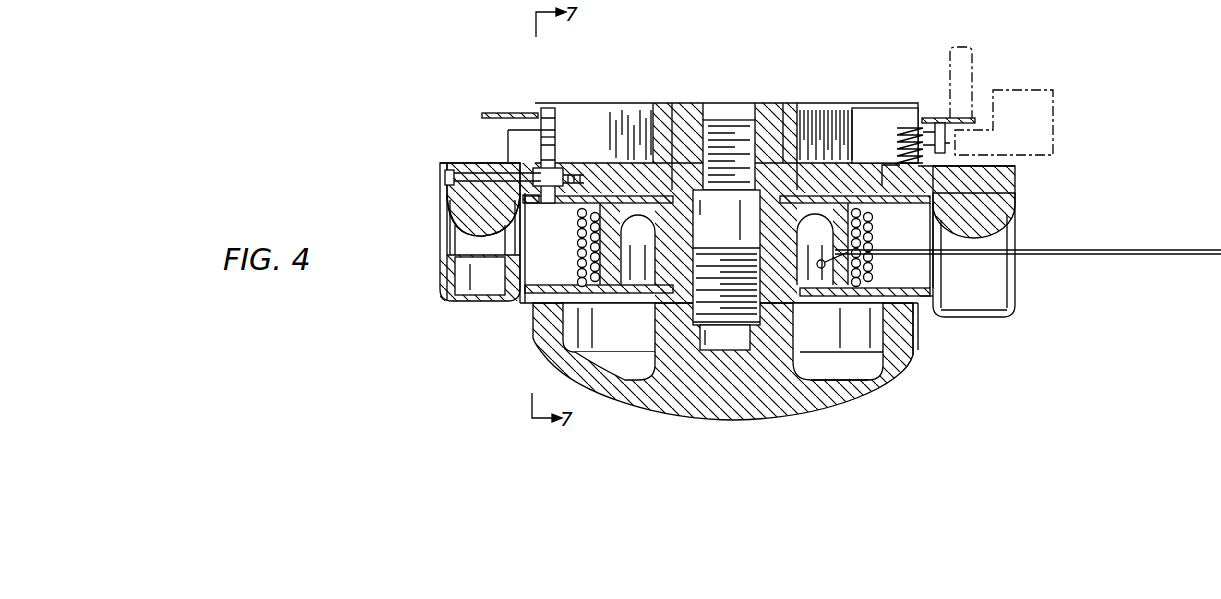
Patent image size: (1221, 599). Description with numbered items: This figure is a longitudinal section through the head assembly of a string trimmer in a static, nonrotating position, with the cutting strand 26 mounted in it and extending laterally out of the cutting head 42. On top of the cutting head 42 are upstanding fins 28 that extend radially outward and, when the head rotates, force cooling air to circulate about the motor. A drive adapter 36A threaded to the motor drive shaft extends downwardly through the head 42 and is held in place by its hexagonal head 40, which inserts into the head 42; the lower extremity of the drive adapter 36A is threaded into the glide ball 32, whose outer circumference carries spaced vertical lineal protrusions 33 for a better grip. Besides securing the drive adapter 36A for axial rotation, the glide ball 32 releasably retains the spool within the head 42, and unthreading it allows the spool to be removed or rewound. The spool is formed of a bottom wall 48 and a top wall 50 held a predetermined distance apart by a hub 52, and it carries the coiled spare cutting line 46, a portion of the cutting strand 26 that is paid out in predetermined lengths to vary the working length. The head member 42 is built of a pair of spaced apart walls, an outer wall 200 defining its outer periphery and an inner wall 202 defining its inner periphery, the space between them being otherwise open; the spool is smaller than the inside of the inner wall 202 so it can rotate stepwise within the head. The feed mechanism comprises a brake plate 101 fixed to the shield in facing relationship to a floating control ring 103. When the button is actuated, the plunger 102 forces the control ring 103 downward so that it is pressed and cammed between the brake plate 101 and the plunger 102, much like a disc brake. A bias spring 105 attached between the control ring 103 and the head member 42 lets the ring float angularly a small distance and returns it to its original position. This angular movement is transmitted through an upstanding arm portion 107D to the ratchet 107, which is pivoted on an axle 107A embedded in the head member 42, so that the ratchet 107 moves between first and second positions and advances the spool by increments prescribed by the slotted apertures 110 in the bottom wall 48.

The cutting strand 26 is at (1170, 250).
The upstanding fins 28 is at (840, 108).
The glide ball 32 is at (735, 416).
The vertical lineal protrusions 33 is at (920, 358).
The drive adapter 36A is at (823, 377).
The hexagonal head 40 is at (768, 105).
The cutting head 42 is at (424, 293).
The spare cutting line 46 is at (582, 247).
The bottom wall 48 is at (955, 215).
The top wall 50 is at (925, 305).
The hub 52 is at (645, 263).
The brake plate 101 is at (1048, 118).
The plunger 102 is at (973, 50).
The control ring 103 is at (499, 112).
The bias spring 105 is at (898, 125).
The ratchet 107 is at (566, 82).
The axle 107A is at (492, 170).
The upstanding arm portion 107D is at (556, 140).
The slotted apertures 110 is at (563, 205).
The outer wall 200 is at (1016, 288).
The inner wall 202 is at (503, 283).